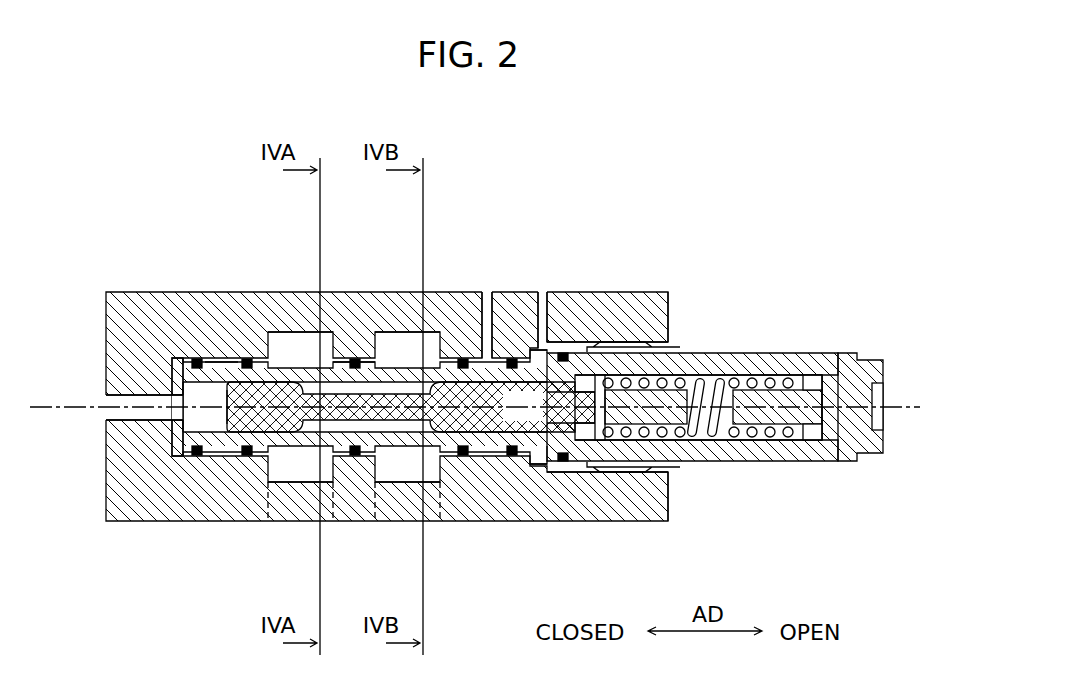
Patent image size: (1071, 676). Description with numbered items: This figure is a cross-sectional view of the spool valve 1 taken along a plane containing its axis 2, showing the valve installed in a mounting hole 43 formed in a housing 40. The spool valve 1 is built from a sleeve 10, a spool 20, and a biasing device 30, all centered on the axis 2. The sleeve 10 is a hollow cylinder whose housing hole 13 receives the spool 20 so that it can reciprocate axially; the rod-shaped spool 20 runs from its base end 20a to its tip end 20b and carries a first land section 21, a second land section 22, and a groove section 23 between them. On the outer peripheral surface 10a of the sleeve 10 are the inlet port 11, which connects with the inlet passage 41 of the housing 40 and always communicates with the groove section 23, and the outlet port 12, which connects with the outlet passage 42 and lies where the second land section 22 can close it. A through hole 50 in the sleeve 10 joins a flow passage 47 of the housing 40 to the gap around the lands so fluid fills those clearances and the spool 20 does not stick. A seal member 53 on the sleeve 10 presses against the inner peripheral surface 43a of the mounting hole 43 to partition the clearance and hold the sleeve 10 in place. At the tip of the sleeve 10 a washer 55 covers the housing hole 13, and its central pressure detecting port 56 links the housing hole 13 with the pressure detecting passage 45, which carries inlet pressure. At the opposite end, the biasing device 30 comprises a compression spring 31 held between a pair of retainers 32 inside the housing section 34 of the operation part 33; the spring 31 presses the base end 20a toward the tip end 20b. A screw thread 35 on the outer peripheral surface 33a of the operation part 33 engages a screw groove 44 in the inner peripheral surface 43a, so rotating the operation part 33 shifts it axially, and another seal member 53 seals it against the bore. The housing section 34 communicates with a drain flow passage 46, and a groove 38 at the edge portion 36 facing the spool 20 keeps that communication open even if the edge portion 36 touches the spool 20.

The spool valve 1 is at (649, 227).
The axis 2 is at (88, 403).
The sleeve 10 is at (258, 358).
The outer peripheral surface 10a is at (375, 332).
The inlet port 11 is at (330, 332).
The outlet port 12 is at (428, 332).
The housing hole 13 is at (183, 358).
The spool 20 is at (510, 418).
The base end 20a is at (578, 462).
The tip end 20b is at (205, 455).
The first land section 21 is at (248, 458).
The second land section 22 is at (466, 458).
The groove section 23 is at (356, 458).
The biasing device 30 is at (830, 345).
The spring 31 is at (707, 437).
The retainers 32 is at (640, 462).
The operation part 33 is at (850, 447).
The outer peripheral surface 33a is at (733, 378).
The housing section 34 is at (788, 375).
The screw thread 35 is at (610, 342).
The edge portion 36 is at (545, 445).
The groove 38 is at (566, 352).
The housing 40 is at (121, 291).
The inlet passage 41 is at (298, 462).
The outlet passage 42 is at (404, 462).
The mounting hole 43 is at (633, 342).
The inner peripheral surface 43a is at (212, 360).
The screw groove 44 is at (641, 343).
The pressure detecting passage 45 is at (112, 392).
The drain flow passage 46 is at (544, 352).
The flow passage 47 is at (485, 356).
The through hole 50 is at (503, 345).
The seal member 53 is at (236, 360).
The washer 55 is at (180, 440).
The pressure detecting port 56 is at (172, 421).